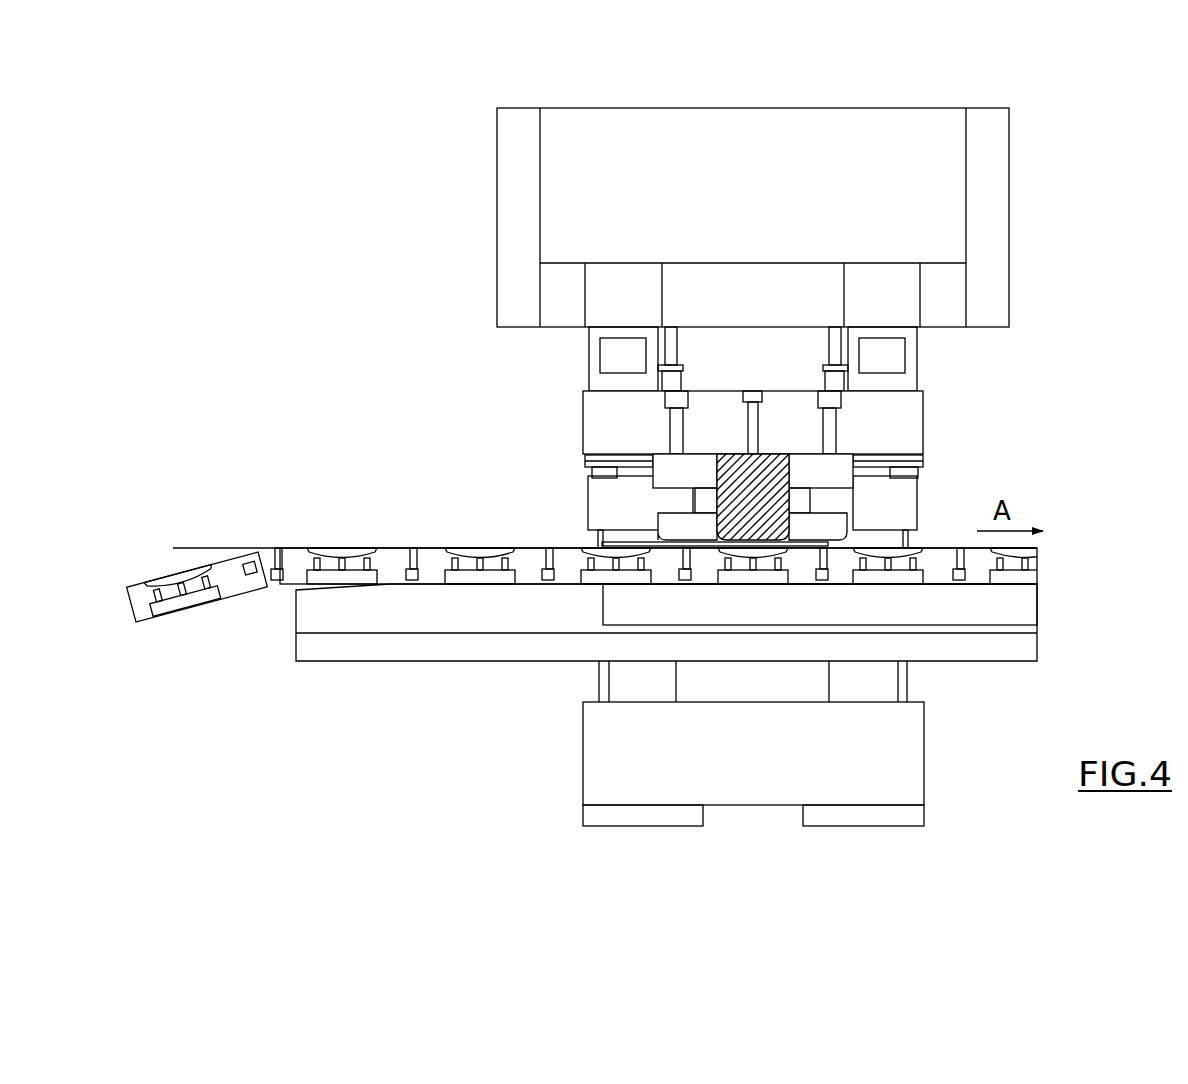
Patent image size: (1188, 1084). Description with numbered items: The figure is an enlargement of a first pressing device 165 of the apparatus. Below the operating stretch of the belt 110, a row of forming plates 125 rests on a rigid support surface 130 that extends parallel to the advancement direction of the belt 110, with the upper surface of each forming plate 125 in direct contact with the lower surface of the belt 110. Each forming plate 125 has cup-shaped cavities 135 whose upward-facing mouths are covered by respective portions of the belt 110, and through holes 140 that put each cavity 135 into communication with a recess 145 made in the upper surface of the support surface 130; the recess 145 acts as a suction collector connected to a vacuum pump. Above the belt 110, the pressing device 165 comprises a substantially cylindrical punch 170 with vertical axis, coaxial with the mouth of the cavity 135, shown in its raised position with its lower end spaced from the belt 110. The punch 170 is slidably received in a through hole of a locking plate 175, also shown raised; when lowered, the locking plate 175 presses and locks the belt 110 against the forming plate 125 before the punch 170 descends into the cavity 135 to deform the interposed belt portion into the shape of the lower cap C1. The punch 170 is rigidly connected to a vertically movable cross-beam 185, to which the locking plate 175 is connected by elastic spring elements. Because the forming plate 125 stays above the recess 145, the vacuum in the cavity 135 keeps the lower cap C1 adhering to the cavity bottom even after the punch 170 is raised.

The belt 110 is at (208, 548).
The forming plate 125 is at (297, 571).
The support surface 130 is at (472, 623).
The cavity 135 is at (343, 550).
The through hole 140 is at (357, 567).
The recess 145 is at (962, 610).
The pressing device 165 is at (413, 140).
The punch 170 is at (760, 503).
The locking plate 175 is at (688, 530).
The cross-beam 185 is at (877, 425).
The lower cap C1 is at (780, 573).